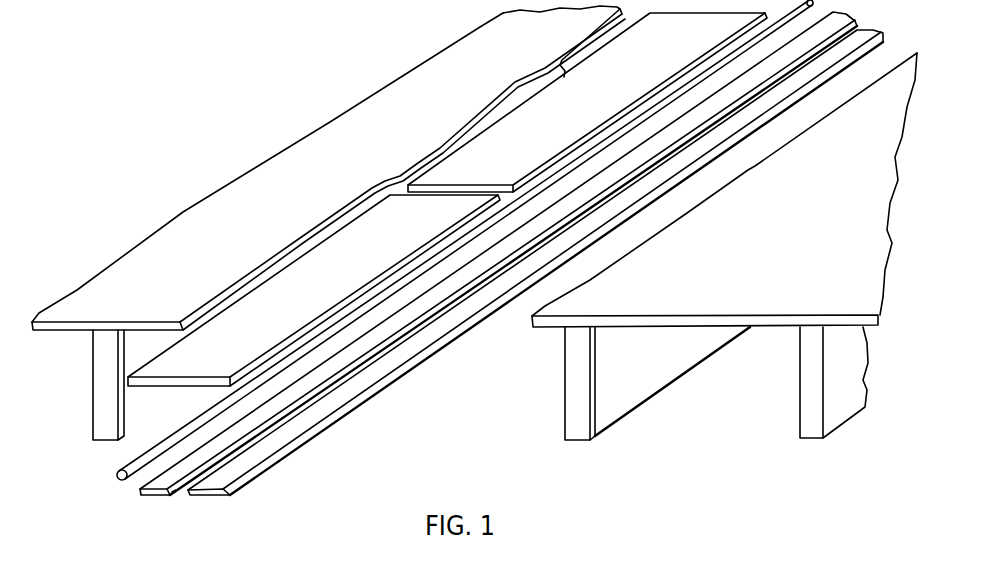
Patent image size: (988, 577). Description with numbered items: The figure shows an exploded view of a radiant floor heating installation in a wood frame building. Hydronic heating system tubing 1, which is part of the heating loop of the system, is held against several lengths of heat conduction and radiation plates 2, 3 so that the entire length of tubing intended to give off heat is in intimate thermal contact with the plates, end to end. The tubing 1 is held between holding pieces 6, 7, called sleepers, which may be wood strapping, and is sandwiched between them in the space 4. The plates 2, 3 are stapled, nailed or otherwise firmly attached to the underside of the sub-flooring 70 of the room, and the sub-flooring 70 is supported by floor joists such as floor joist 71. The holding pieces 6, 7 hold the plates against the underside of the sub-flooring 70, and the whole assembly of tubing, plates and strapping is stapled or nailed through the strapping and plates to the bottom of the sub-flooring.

The hydronic heating system tubing 1 is at (117, 472).
The heat conduction and radiation plate 2 is at (147, 387).
The heat conduction and radiation plate 3 is at (612, 66).
The space 4 is at (183, 495).
The holding piece (sleeper) 6 is at (147, 495).
The holding piece (sleeper) 7 is at (213, 495).
The sub-flooring 70 is at (143, 267).
The floor joist 71 is at (93, 368).